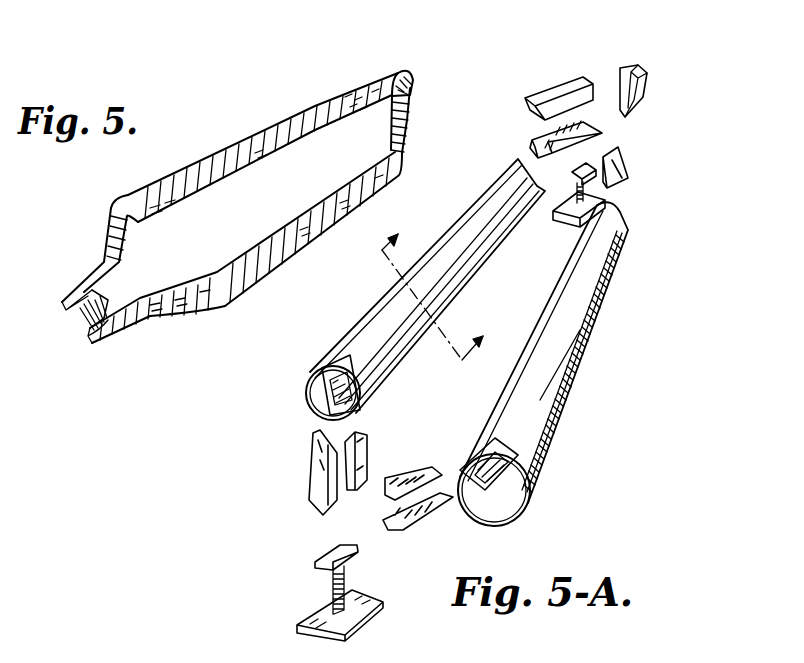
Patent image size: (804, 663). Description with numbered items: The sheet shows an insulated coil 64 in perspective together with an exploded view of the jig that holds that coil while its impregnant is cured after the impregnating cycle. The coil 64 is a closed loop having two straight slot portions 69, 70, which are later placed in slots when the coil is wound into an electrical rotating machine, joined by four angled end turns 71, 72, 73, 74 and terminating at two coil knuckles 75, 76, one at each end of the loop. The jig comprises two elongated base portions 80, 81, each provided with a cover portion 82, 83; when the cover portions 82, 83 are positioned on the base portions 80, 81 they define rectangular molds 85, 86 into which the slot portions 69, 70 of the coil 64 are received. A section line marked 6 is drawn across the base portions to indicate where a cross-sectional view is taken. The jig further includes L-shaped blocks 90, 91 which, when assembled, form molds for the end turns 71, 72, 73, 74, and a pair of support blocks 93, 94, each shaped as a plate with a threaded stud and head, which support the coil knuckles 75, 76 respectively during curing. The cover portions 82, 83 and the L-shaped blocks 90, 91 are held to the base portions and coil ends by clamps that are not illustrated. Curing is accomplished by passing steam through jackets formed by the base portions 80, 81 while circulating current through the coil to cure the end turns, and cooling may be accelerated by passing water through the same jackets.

In FIG. 5, the coil 64 is at (412, 68).
In FIG. 5, the slot portion 69 is at (210, 152).
In FIG. 5, the slot portion 70 is at (288, 244).
In FIG. 5, the end turn 71 is at (353, 87).
In FIG. 5, the end turn 72 is at (404, 130).
In FIG. 5, the end turn 73 is at (111, 243).
In FIG. 5, the end turn 74 is at (183, 312).
In FIG. 5, the coil knuckle 75 is at (93, 317).
In FIG. 5, the coil knuckle 76 is at (412, 87).
In FIG. 5-A, the section line 6 is at (440, 287).
In FIG. 5-A, the base portion 80 is at (396, 300).
In FIG. 5-A, the base portion 81 is at (525, 369).
In FIG. 5-A, the cover portion 82 is at (497, 198).
In FIG. 5-A, the cover portion 83 is at (558, 297).
In FIG. 5-A, the rectangular mold 85 is at (337, 393).
In FIG. 5-A, the rectangular mold 86 is at (482, 462).
In FIG. 5-A, the L-shaped block 90 is at (647, 92).
In FIG. 5-A, the L-shaped block 91 is at (625, 173).
In FIG. 5-A, the support block 93 is at (370, 620).
In FIG. 5-A, the support block 94 is at (600, 200).